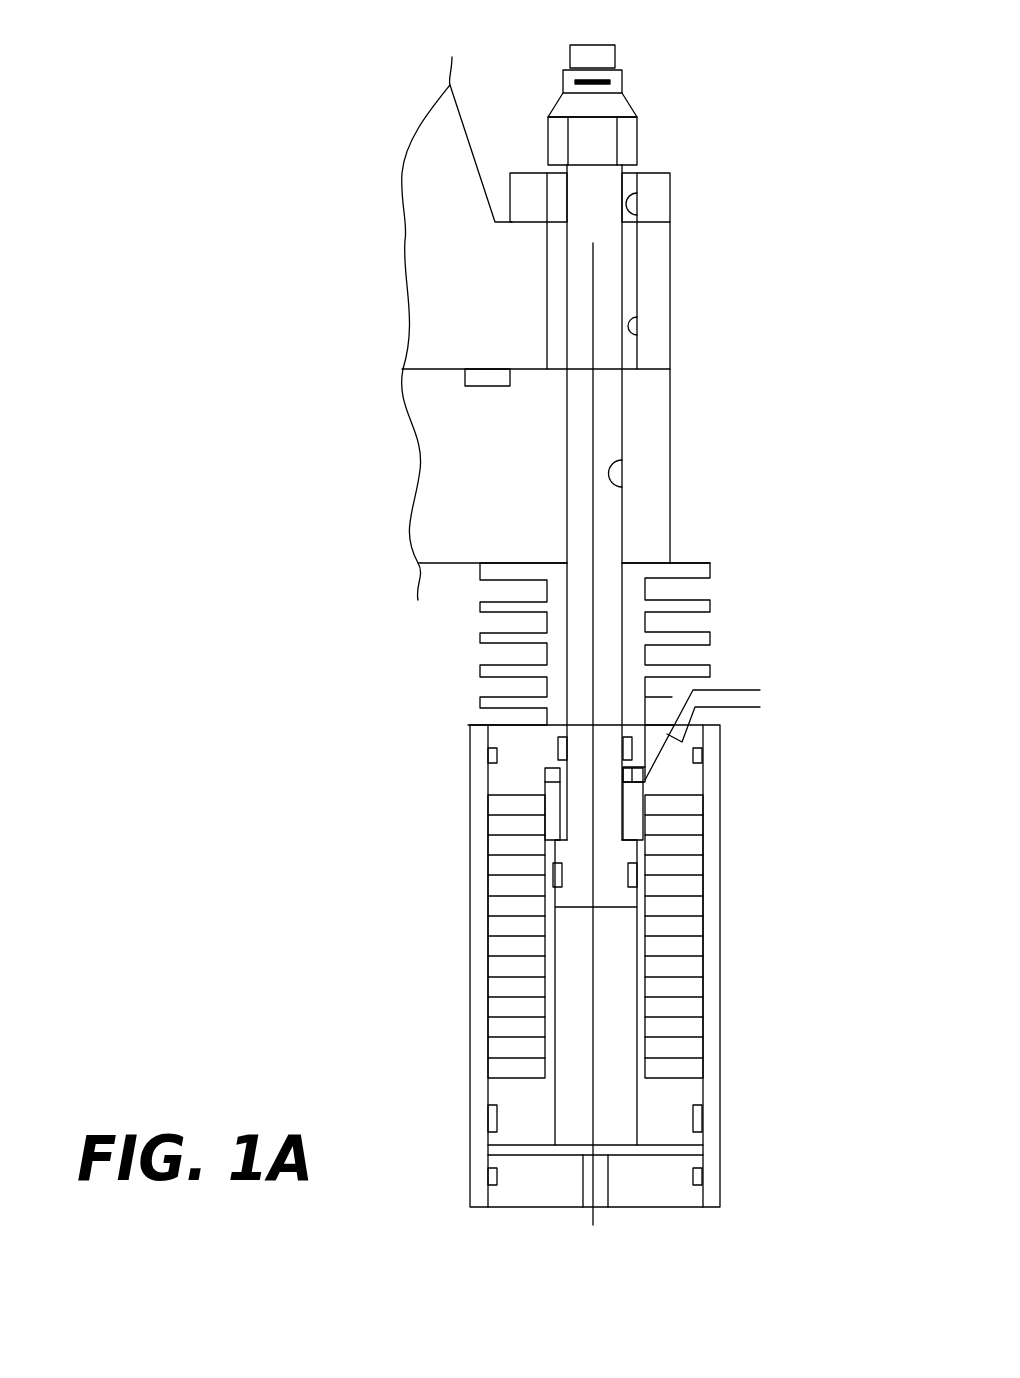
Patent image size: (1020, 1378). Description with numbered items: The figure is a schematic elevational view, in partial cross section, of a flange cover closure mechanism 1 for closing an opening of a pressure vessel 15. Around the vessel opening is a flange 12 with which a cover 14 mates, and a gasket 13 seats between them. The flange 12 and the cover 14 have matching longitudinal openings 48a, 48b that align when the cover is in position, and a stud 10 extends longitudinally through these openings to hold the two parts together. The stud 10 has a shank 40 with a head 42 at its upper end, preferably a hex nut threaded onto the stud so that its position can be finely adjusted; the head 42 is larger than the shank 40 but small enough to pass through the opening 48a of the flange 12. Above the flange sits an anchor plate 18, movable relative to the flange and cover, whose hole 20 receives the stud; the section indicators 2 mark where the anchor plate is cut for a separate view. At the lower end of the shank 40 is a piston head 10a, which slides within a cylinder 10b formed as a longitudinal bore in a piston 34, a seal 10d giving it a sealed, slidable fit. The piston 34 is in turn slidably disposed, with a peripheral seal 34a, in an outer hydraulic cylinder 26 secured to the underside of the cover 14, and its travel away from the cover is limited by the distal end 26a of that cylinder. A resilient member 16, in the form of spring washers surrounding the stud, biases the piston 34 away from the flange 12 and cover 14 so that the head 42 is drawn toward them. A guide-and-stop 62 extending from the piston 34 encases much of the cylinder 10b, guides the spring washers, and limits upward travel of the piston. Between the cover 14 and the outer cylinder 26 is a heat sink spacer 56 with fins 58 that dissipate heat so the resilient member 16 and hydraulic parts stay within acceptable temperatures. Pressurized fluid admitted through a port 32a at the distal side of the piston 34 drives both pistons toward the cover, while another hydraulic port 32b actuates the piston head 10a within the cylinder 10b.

The flange cover closure mechanism 1 is at (785, 752).
The section line 2- 2 is at (747, 35).
The stud 10 is at (607, 427).
The piston head 10a is at (632, 855).
The cylinder 10b is at (570, 1013).
The seal 10d is at (558, 872).
The flange 12 is at (675, 300).
The gasket 13 is at (478, 369).
The cover 14 is at (564, 504).
The pressure vessel 15 is at (404, 328).
The resilient member 16 is at (692, 950).
The anchor plate 18 is at (672, 190).
The hole 20 is at (637, 212).
The outer hydraulic cylinder 26 is at (722, 888).
The distal end 26a is at (525, 1157).
The port 32a is at (593, 1210).
The hydraulic port 32b is at (743, 688).
The piston 34 is at (700, 1090).
The seal 34a is at (705, 1118).
The shank 40 is at (613, 550).
The head 42 is at (642, 104).
The opening 48a is at (637, 333).
The opening 48b is at (622, 488).
The heat sink spacer 56 is at (480, 640).
The fins 58 is at (690, 590).
The guide-and-stop 62 is at (643, 975).